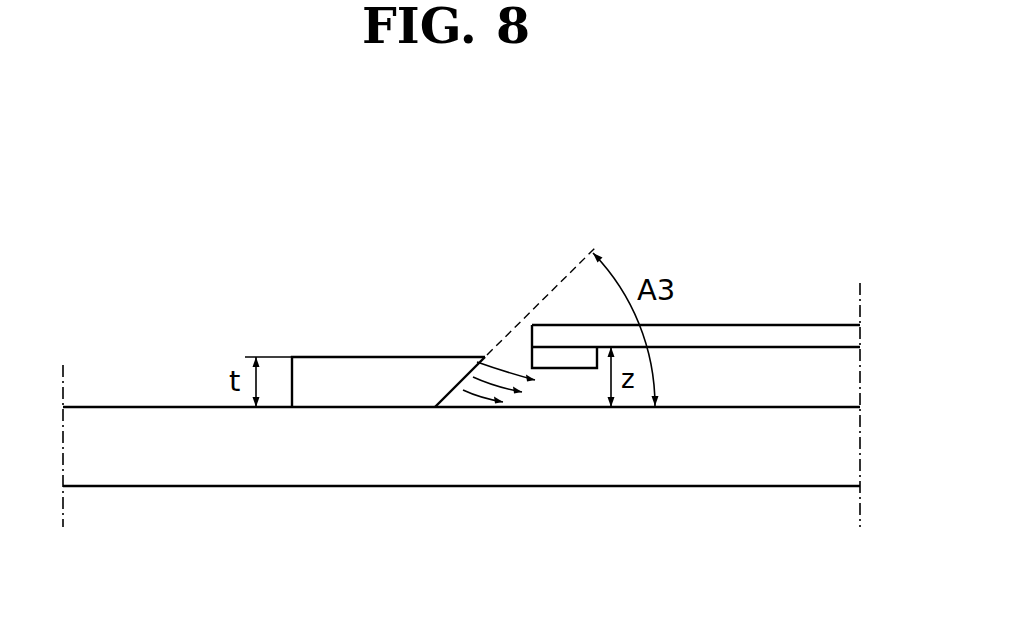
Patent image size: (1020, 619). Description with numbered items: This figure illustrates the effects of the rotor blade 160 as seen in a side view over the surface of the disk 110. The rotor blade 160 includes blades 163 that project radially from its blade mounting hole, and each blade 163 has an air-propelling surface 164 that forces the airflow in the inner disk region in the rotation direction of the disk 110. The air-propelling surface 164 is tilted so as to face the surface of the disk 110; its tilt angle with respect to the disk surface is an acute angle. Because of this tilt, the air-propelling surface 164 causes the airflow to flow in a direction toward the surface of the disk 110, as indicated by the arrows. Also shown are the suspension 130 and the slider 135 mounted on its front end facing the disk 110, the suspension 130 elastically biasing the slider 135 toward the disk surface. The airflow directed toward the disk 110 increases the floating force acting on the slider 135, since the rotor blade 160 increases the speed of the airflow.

The disk 110 is at (740, 473).
The suspension 130 is at (744, 330).
The slider 135 is at (560, 360).
The rotor blade 160 is at (352, 328).
The blade 163 is at (355, 357).
The air-propelling surface 164 is at (480, 368).